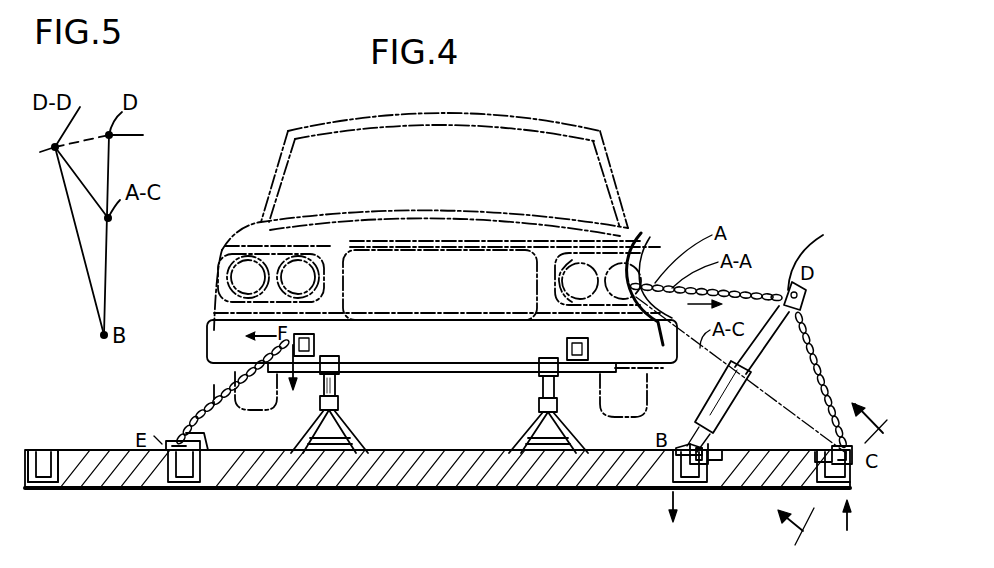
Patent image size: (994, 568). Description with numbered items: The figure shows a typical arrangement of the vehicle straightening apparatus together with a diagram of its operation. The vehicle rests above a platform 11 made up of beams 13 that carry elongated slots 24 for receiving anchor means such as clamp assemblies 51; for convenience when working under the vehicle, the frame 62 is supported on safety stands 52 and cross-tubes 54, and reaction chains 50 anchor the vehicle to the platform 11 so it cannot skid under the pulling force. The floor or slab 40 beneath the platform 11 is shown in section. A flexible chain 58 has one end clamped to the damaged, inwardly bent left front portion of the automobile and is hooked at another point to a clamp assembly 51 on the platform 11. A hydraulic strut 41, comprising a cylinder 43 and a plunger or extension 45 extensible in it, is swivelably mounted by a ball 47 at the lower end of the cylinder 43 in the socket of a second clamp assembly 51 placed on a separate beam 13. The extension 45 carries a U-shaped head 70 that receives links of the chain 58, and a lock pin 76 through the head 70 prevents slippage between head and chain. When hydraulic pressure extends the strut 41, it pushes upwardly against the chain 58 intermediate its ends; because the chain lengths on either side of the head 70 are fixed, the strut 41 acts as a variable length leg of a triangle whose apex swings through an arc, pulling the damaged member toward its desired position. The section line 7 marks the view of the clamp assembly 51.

The section line 7- 7 is at (828, 465).
The platform 11 is at (60, 449).
The beams 13 is at (163, 488).
The elongated slots 24 is at (46, 447).
The floor slab 40 is at (345, 488).
The hydraulic strut 41 is at (745, 383).
The cylinder 43 is at (712, 396).
The extension 45 is at (771, 342).
The ball 47 is at (678, 452).
The reaction chains 50 is at (215, 393).
The clamp assembly 51 is at (803, 454).
The safety stands 52 is at (360, 420).
The cross-tubes 54 is at (470, 362).
The chain 58 is at (822, 350).
The frame 62 is at (316, 345).
The head 70 is at (808, 304).
The lock pin 76 is at (820, 259).